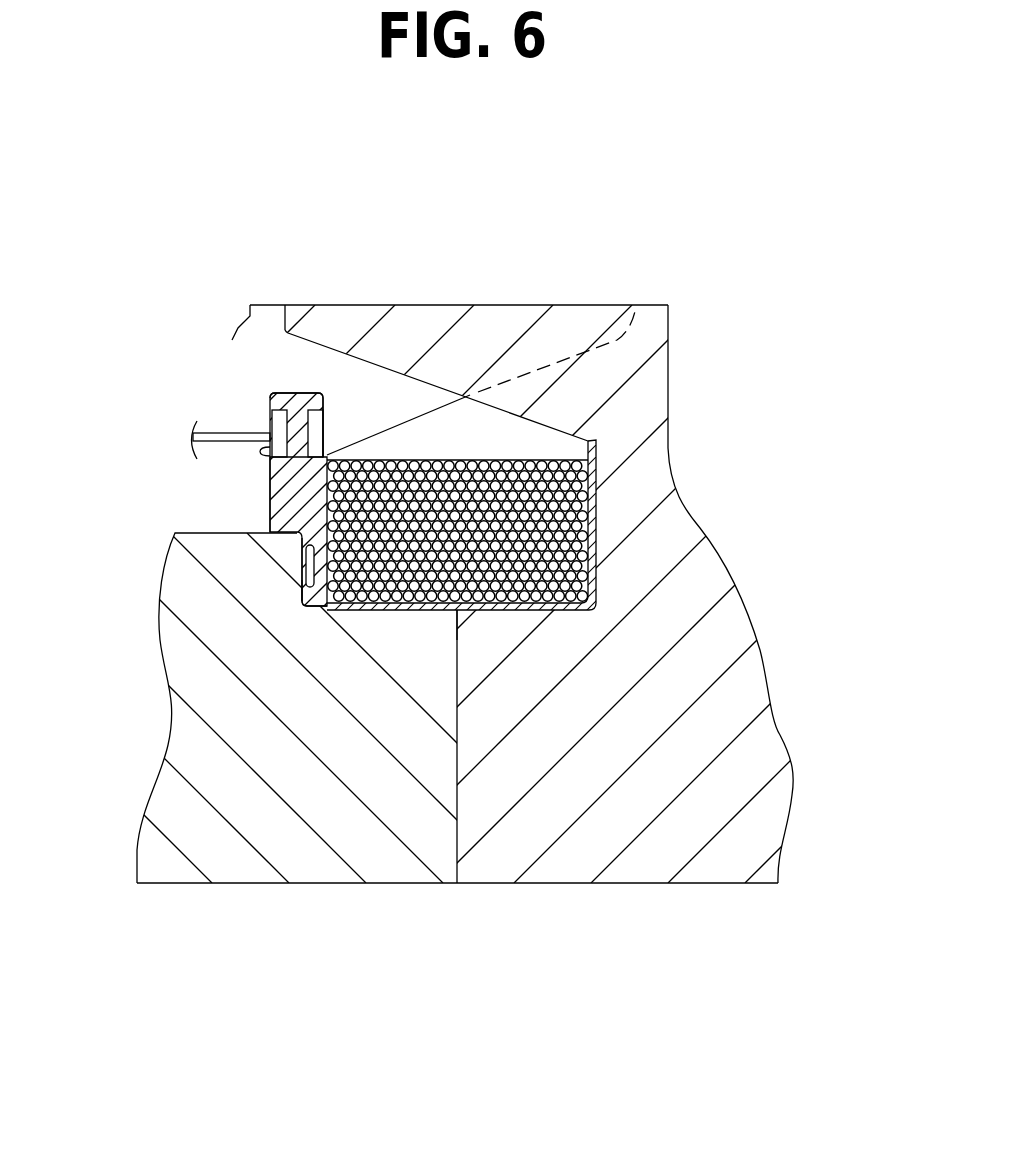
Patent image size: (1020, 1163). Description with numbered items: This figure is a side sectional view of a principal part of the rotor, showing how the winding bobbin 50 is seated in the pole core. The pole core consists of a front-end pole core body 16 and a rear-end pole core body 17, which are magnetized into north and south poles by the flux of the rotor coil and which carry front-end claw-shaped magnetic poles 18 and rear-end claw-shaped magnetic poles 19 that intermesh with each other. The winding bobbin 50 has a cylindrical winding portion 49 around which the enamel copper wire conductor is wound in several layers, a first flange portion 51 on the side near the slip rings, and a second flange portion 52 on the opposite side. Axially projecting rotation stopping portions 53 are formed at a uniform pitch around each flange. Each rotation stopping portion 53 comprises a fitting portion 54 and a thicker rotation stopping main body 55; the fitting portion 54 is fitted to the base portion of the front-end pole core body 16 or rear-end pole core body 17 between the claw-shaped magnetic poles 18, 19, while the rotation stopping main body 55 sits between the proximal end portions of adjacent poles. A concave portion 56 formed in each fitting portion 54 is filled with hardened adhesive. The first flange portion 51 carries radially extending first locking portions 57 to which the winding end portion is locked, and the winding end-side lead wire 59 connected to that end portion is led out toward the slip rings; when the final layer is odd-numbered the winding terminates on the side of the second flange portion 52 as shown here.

The front-end pole core body 16 is at (743, 772).
The rear-end pole core body 17 is at (200, 829).
The front-end claw-shaped magnetic poles 18 is at (522, 343).
The rear-end claw-shaped magnetic poles 19 is at (420, 443).
The winding portion 49 is at (520, 611).
The winding bobbin 50 is at (603, 512).
The first flange portion 51 is at (322, 598).
The second flange portion 52 is at (600, 558).
The rotation stopping portion 53 is at (288, 518).
The fitting portion 54 is at (325, 580).
The rotation stopping main body 55 is at (283, 480).
The concave portion 56 is at (303, 570).
The first locking portion 57 is at (297, 392).
The winding end-side lead wire 59 is at (223, 432).